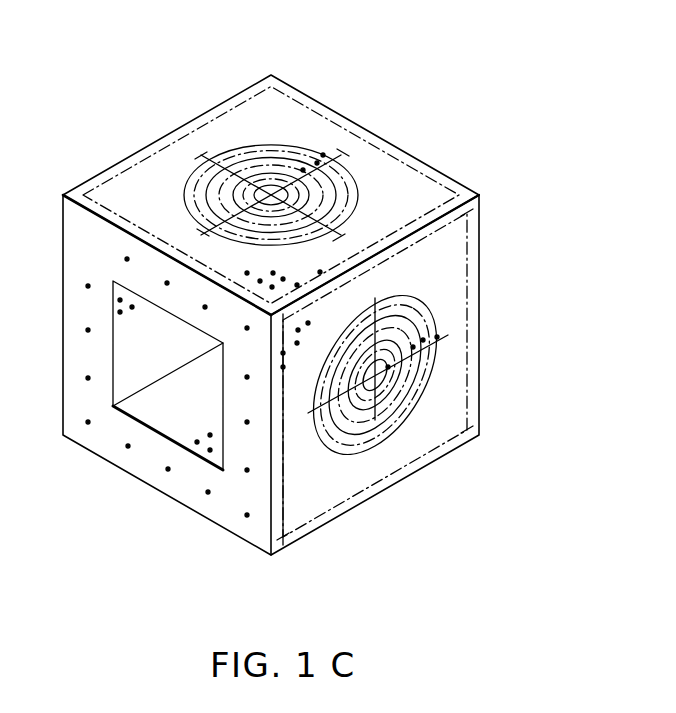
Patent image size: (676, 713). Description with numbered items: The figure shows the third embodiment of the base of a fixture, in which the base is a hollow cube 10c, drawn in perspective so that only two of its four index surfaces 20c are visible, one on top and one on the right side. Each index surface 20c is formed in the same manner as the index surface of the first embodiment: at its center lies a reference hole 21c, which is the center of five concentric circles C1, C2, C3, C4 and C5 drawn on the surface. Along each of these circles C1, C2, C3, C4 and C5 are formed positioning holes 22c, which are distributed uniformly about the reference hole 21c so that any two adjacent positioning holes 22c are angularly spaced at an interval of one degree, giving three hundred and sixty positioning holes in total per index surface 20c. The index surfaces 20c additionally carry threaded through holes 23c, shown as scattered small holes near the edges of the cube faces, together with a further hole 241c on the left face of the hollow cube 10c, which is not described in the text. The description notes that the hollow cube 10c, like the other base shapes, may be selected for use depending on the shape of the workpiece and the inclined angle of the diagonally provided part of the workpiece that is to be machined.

The hollow cube 10c is at (307, 82).
The index surfaces 20c is at (328, 133).
The reference hole 21c is at (270, 193).
The positioning holes 22c is at (323, 155).
The threaded through holes 23c is at (295, 272).
The connection hole 241c is at (207, 492).
The concentric circle C1 is at (262, 190).
The concentric circle C2 is at (240, 186).
The concentric circle C3 is at (220, 192).
The concentric circle C4 is at (207, 173).
The concentric circle C5 is at (187, 190).